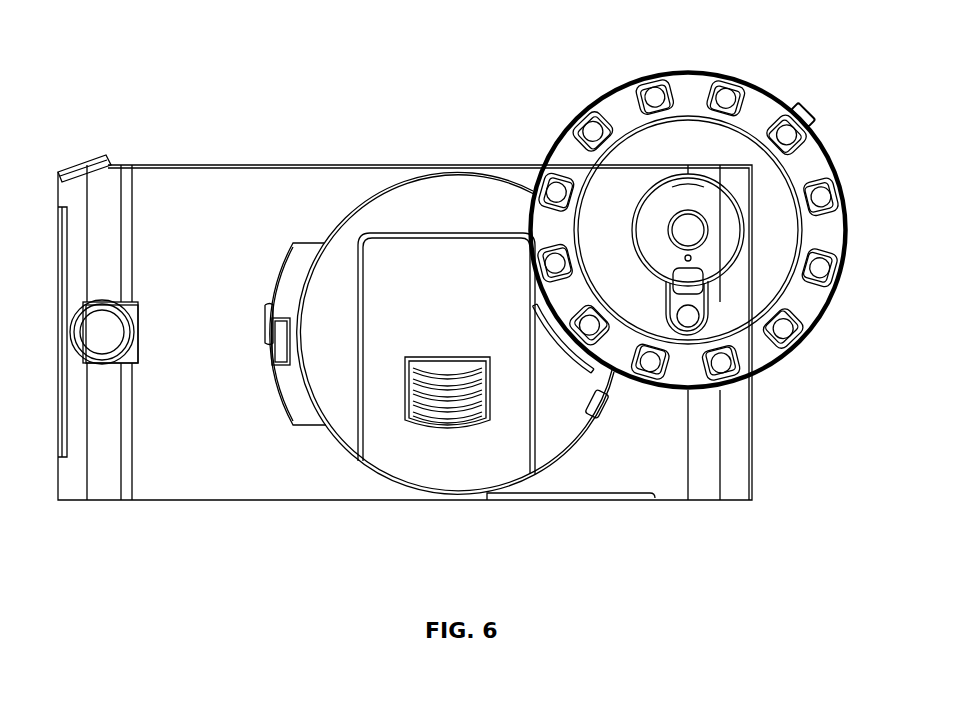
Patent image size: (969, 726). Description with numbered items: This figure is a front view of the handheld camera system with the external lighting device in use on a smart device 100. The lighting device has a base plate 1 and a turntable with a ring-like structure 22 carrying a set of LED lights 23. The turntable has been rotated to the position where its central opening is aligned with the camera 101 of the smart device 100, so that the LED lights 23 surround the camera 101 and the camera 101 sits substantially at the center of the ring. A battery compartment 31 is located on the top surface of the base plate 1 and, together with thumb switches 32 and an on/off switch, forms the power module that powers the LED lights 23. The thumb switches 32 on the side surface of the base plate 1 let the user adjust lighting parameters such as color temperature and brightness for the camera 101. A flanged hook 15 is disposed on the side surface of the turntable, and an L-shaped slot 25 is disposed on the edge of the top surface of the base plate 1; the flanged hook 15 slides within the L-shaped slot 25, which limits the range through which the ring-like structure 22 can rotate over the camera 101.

The smart device 100 is at (245, 163).
The base plate 1 is at (402, 175).
The camera 101 is at (676, 230).
The ring-like structure 22 is at (600, 92).
The LED lights 23 is at (707, 83).
The flanged hook 15 is at (797, 103).
The thumb switch 32 is at (272, 277).
The L-shaped slot 25 is at (274, 356).
The battery compartment 31 is at (408, 462).